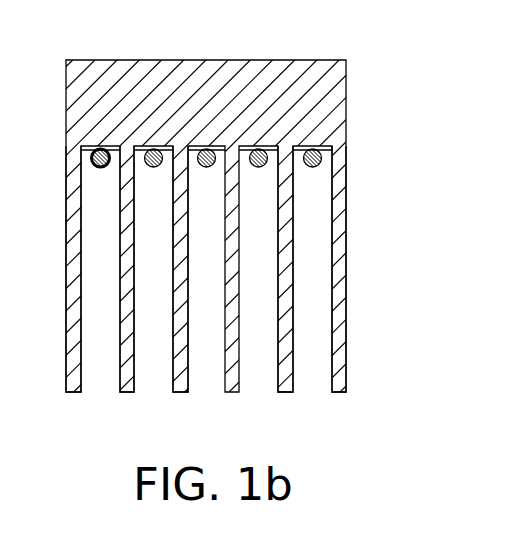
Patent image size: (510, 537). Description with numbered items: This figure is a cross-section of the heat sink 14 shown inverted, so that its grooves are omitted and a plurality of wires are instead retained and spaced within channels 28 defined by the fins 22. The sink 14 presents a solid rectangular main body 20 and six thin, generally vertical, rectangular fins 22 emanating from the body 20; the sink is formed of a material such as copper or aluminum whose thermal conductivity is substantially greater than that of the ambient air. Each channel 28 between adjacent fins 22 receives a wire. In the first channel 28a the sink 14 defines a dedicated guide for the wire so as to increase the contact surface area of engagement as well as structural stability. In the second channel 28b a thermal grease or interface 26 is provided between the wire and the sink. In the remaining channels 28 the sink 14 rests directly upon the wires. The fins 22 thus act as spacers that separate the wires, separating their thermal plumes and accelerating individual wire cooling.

The main body 20 is at (386, 82).
The thermal grease or interface 26 is at (155, 146).
The sink 14 is at (66, 152).
The fins 22 is at (346, 203).
The channels 28 is at (306, 258).
The first channel 28a is at (93, 206).
The second channel 28b is at (140, 250).